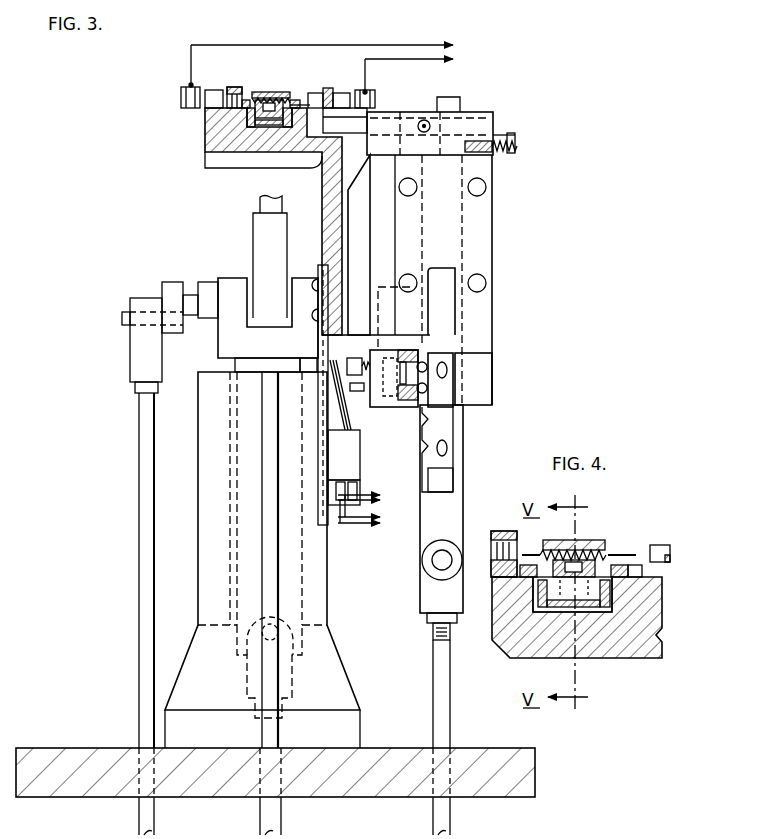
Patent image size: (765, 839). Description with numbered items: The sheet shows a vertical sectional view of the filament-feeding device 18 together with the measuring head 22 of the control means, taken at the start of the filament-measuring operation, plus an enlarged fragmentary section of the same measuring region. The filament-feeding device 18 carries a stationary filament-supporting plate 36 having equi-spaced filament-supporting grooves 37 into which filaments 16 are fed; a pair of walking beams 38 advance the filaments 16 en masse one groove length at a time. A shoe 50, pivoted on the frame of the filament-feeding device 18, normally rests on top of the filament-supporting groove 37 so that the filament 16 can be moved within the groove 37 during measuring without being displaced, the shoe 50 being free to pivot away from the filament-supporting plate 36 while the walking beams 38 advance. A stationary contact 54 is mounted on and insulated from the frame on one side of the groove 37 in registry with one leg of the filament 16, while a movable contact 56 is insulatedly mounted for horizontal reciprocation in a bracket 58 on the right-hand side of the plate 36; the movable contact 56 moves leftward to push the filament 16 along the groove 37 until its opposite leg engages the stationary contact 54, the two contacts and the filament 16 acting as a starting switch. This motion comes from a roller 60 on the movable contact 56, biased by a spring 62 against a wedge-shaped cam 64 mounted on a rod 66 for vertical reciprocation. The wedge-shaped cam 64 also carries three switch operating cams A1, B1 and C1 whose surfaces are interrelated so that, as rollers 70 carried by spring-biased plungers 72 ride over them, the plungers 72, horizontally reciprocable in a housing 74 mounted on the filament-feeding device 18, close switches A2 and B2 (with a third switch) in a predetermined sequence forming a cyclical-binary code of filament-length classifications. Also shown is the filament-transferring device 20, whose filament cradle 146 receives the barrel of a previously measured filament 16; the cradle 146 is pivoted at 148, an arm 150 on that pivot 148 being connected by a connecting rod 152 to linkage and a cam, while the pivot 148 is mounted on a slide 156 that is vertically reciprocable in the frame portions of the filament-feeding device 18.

In FIG. 3, the filament 16 is at (296, 100).
In FIG. 4, the filament 16 is at (618, 557).
In FIG. 3, the filament-feeding device 18 is at (205, 148).
In FIG. 4, the filament-feeding device 18 is at (636, 660).
In FIG. 3, the filament-transferring device 20 is at (218, 276).
In FIG. 3, the measuring head 22 is at (215, 100).
In FIG. 3, the filament-supporting plate 36 is at (265, 135).
In FIG. 4, the filament-supporting plate 36 is at (578, 580).
In FIG. 4, the filament-supporting groove 37 is at (580, 552).
In FIG. 3, the walking beam 38 is at (288, 135).
In FIG. 4, the walking beam 38 is at (610, 593).
In FIG. 3, the shoe 50 is at (265, 92).
In FIG. 4, the shoe 50 is at (565, 542).
In FIG. 3, the stationary contact 54 is at (233, 97).
In FIG. 4, the stationary contact 54 is at (510, 540).
In FIG. 3, the movable contact 56 is at (312, 95).
In FIG. 4, the movable contact 56 is at (660, 548).
In FIG. 3, the bracket 58 is at (393, 112).
In FIG. 3, the roller 60 is at (414, 190).
In FIG. 3, the spring 62 is at (497, 156).
In FIG. 3, the wedge-shaped cam 64 is at (480, 96).
In FIG. 3, the rod 66 is at (436, 685).
In FIG. 3, the roller 70 is at (420, 392).
In FIG. 3, the spring-biased plunger 72 is at (358, 378).
In FIG. 3, the housing 74 is at (378, 405).
In FIG. 3, the filament cradle 146 is at (262, 203).
In FIG. 3, the pivot 148 is at (205, 296).
In FIG. 3, the arm 150 is at (166, 290).
In FIG. 3, the connecting rod 152 is at (142, 488).
In FIG. 3, the slide 156 is at (237, 367).
In FIG. 3, the switch operating cam A1 is at (447, 428).
In FIG. 3, the switch operating cam B1 is at (450, 482).
In FIG. 3, the switch operating cam C1 is at (424, 418).
In FIG. 3, the control switch A2 is at (354, 467).
In FIG. 3, the control switch B2 is at (354, 491).